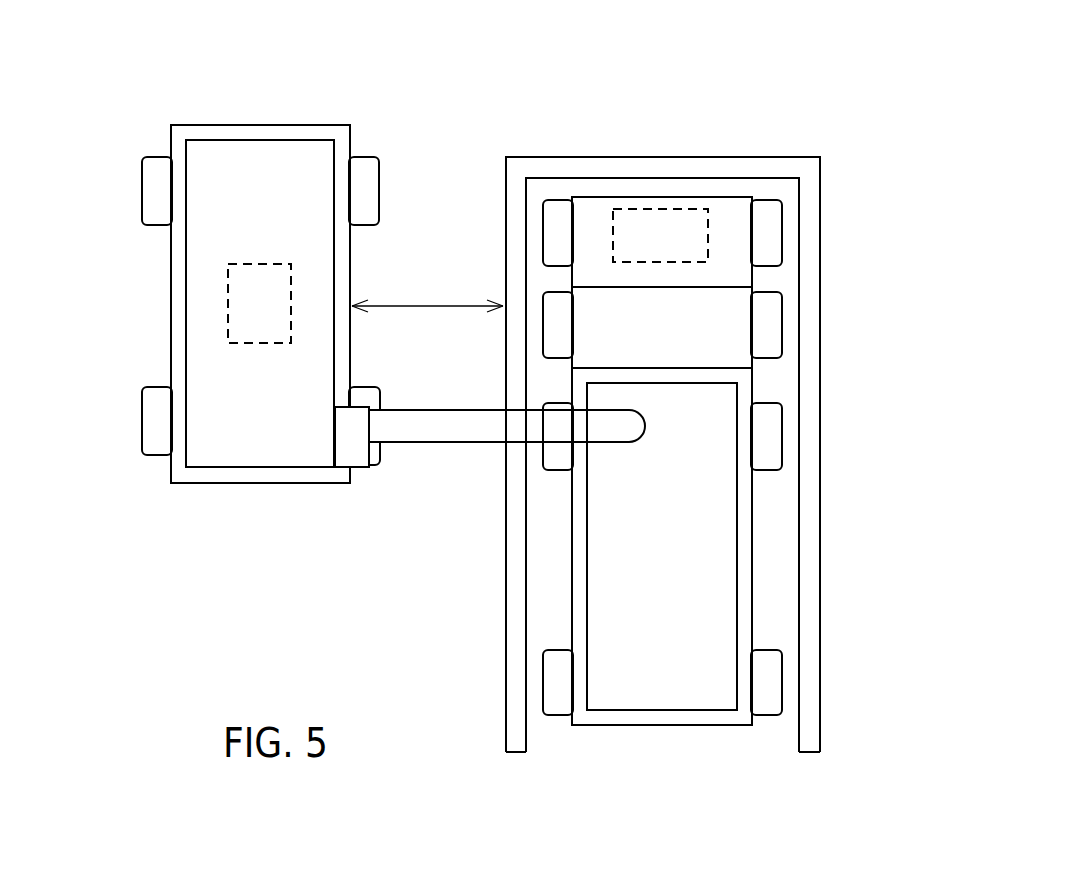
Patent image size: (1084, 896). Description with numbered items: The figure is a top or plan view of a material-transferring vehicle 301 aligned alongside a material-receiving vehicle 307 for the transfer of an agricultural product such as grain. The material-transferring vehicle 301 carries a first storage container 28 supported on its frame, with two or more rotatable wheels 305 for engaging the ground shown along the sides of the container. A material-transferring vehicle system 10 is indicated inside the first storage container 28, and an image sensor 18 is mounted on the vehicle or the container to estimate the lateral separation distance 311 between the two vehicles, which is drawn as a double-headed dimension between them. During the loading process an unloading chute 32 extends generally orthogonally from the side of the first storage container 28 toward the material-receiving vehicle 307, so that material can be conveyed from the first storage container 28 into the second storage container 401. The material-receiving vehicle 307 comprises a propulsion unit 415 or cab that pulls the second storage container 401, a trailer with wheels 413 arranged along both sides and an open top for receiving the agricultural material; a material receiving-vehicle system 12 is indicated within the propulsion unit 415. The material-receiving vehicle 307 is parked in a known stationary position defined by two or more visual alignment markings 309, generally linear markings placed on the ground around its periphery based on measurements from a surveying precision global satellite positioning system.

The material-transferring vehicle system 10 is at (228, 293).
The material receiving-vehicle system 12 is at (665, 208).
The image sensor 18 is at (356, 453).
The first storage container 28 is at (240, 128).
The unloading chute 32 is at (433, 430).
The material-transferring vehicle 301 is at (348, 282).
The rotatable wheels 305 is at (142, 195).
The material-receiving vehicle 307 is at (675, 462).
The visual alignment markings 309 is at (583, 163).
The lateral separation distance 311 is at (414, 302).
The second storage container 401 is at (672, 685).
The wheels 413 is at (548, 220).
The propulsion unit 415 is at (732, 210).